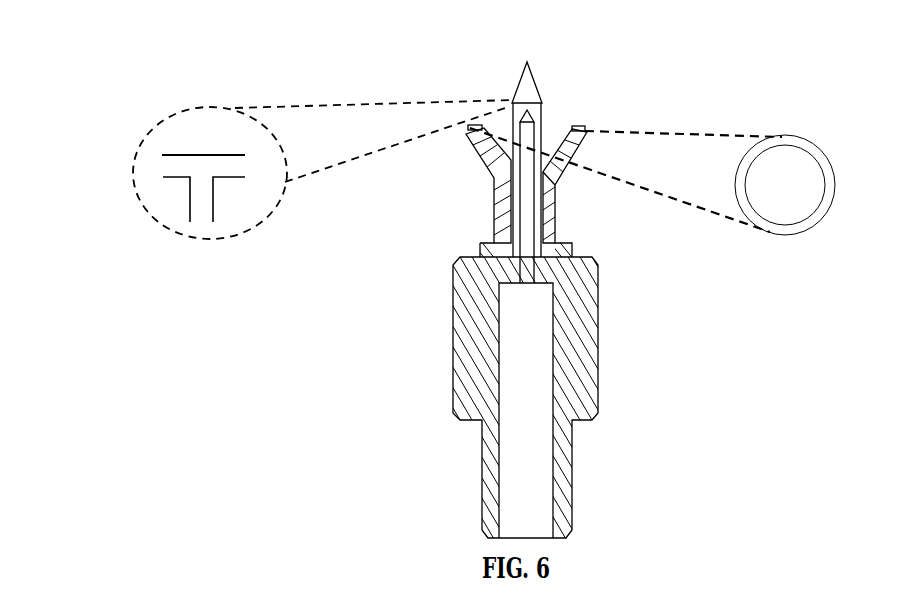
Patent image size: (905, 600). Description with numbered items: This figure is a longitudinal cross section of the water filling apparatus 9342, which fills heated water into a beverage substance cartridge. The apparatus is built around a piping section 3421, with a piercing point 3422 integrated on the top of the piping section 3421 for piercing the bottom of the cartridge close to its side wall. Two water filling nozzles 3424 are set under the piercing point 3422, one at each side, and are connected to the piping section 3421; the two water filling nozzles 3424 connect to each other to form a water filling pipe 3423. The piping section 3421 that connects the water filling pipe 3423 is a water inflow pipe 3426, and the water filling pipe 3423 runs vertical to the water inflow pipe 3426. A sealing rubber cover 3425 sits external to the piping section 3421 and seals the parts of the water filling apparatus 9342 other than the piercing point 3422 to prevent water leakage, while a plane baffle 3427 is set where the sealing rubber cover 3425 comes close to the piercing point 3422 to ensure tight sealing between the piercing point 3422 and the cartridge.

The water filling apparatus 9342 is at (448, 278).
The piping section 3421 is at (457, 272).
The piercing point 3422 is at (530, 86).
The water filling pipe 3423 is at (182, 163).
The water filling nozzle 3424 is at (542, 108).
The sealing rubber cover 3425 is at (555, 165).
The water inflow pipe 3426 is at (527, 222).
The plane baffle 3427 is at (582, 127).